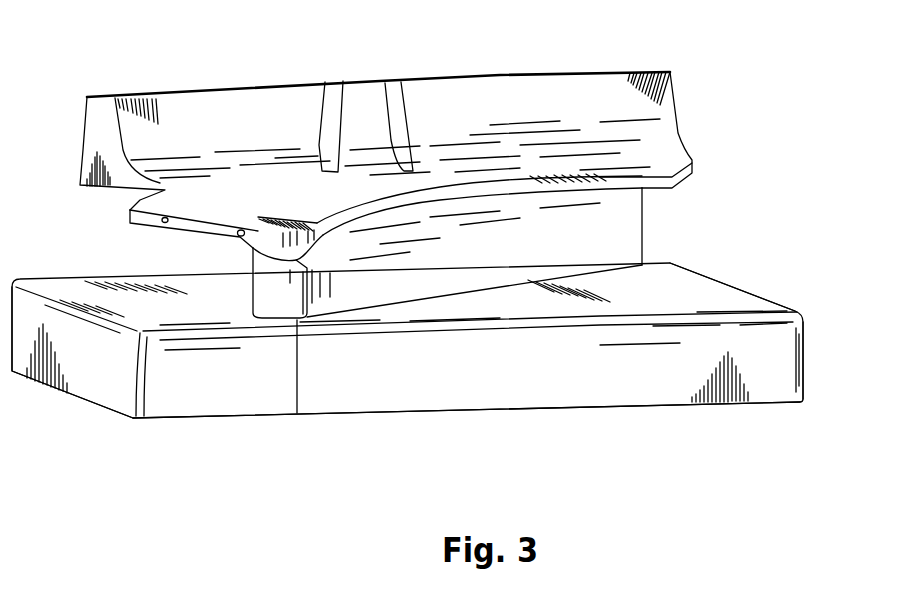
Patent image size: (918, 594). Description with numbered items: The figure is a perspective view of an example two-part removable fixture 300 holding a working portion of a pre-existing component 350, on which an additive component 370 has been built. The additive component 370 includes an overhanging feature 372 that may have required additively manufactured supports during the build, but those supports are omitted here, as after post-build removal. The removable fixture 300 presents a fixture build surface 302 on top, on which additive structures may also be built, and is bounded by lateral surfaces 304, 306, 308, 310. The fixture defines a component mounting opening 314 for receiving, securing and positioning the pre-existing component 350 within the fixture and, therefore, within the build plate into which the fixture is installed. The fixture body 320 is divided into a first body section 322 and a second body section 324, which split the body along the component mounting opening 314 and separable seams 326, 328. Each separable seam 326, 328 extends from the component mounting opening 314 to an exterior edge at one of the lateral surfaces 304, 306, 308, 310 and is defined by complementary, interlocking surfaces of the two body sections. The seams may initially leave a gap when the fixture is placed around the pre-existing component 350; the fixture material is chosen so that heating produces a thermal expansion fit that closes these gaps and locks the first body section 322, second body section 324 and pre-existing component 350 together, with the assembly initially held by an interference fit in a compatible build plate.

The removable fixture 300 is at (485, 448).
The fixture build surface 302 is at (70, 290).
The lateral surface 304 is at (413, 393).
The lateral surface 306 is at (803, 358).
The lateral surface 308 is at (59, 280).
The lateral surface 310 is at (67, 348).
The component mounting opening 314 is at (510, 288).
The fixture body 320 is at (721, 302).
The first body section 322 is at (217, 398).
The second body section 324 is at (625, 388).
The separable seam 326 is at (297, 393).
The separable seam 328 is at (658, 264).
The pre-existing component 350 is at (622, 248).
The additive component 370 is at (513, 104).
The overhanging feature 372 is at (203, 230).